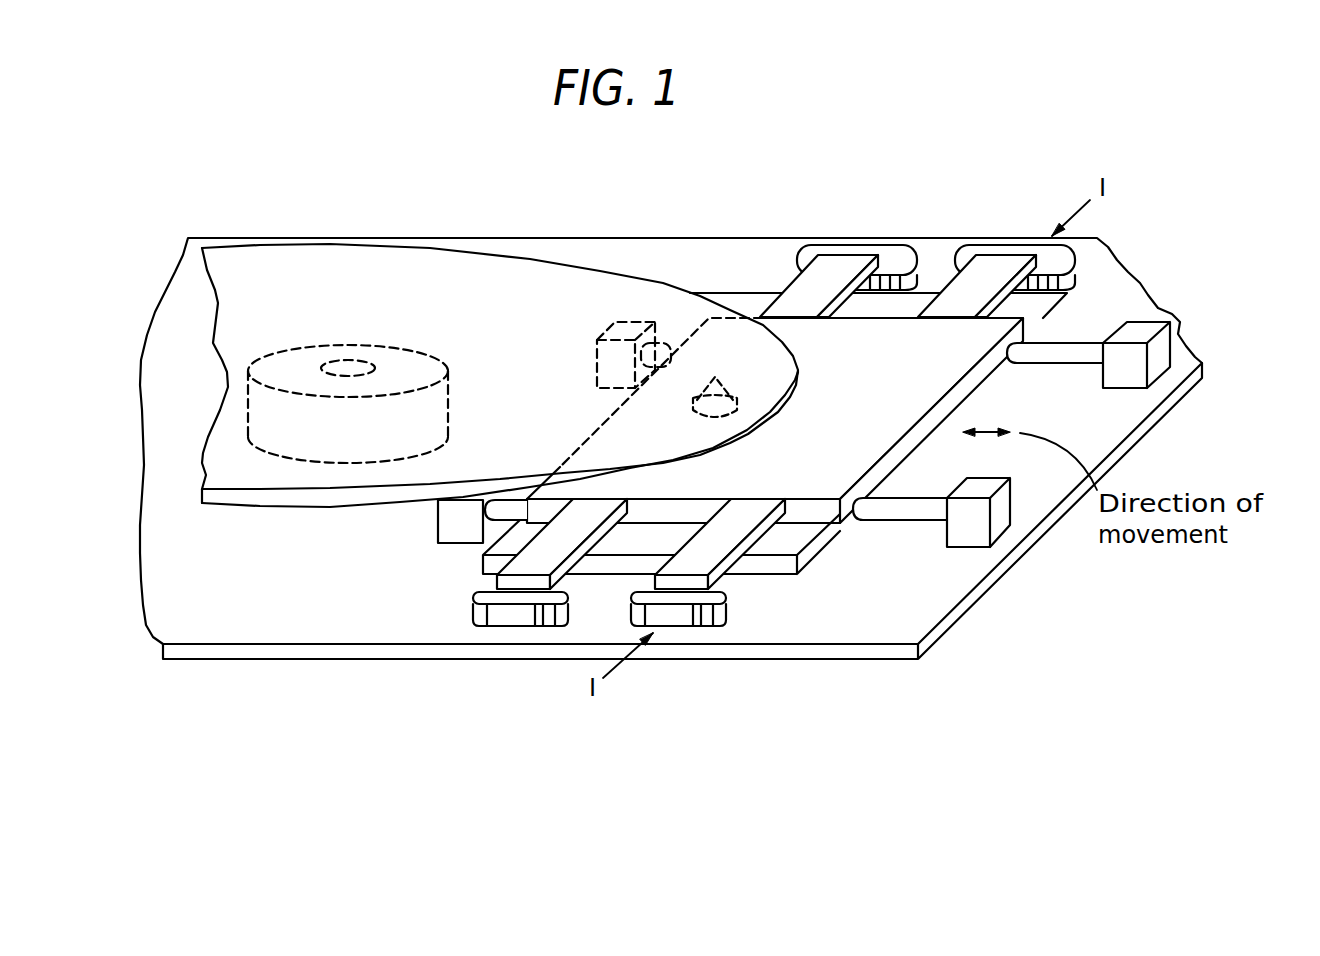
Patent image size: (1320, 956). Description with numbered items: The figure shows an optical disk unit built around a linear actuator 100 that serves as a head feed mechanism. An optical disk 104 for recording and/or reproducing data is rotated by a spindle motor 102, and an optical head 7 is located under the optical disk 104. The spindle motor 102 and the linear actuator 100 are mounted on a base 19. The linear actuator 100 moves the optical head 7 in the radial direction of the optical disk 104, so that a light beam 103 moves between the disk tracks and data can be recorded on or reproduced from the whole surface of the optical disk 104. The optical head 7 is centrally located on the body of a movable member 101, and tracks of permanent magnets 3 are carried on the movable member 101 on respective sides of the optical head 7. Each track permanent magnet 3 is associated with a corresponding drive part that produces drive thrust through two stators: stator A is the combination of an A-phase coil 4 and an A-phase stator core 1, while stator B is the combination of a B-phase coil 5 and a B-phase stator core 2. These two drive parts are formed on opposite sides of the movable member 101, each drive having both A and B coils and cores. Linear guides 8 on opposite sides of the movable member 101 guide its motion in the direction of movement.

The A-phase stator core 1 is at (807, 277).
The B-phase stator core 2 is at (955, 303).
The track permanent magnet 3 is at (755, 293).
The A-phase coil 4 is at (893, 258).
The B-phase coil 5 is at (1058, 267).
The optical head 7 is at (747, 427).
The linear guide 8 is at (670, 350).
The base 19 is at (983, 593).
The linear actuator 100 is at (992, 267).
The movable member 101 is at (912, 465).
The spindle motor 102 is at (330, 460).
The light beam 103 is at (733, 383).
The optical disk 104 is at (282, 260).